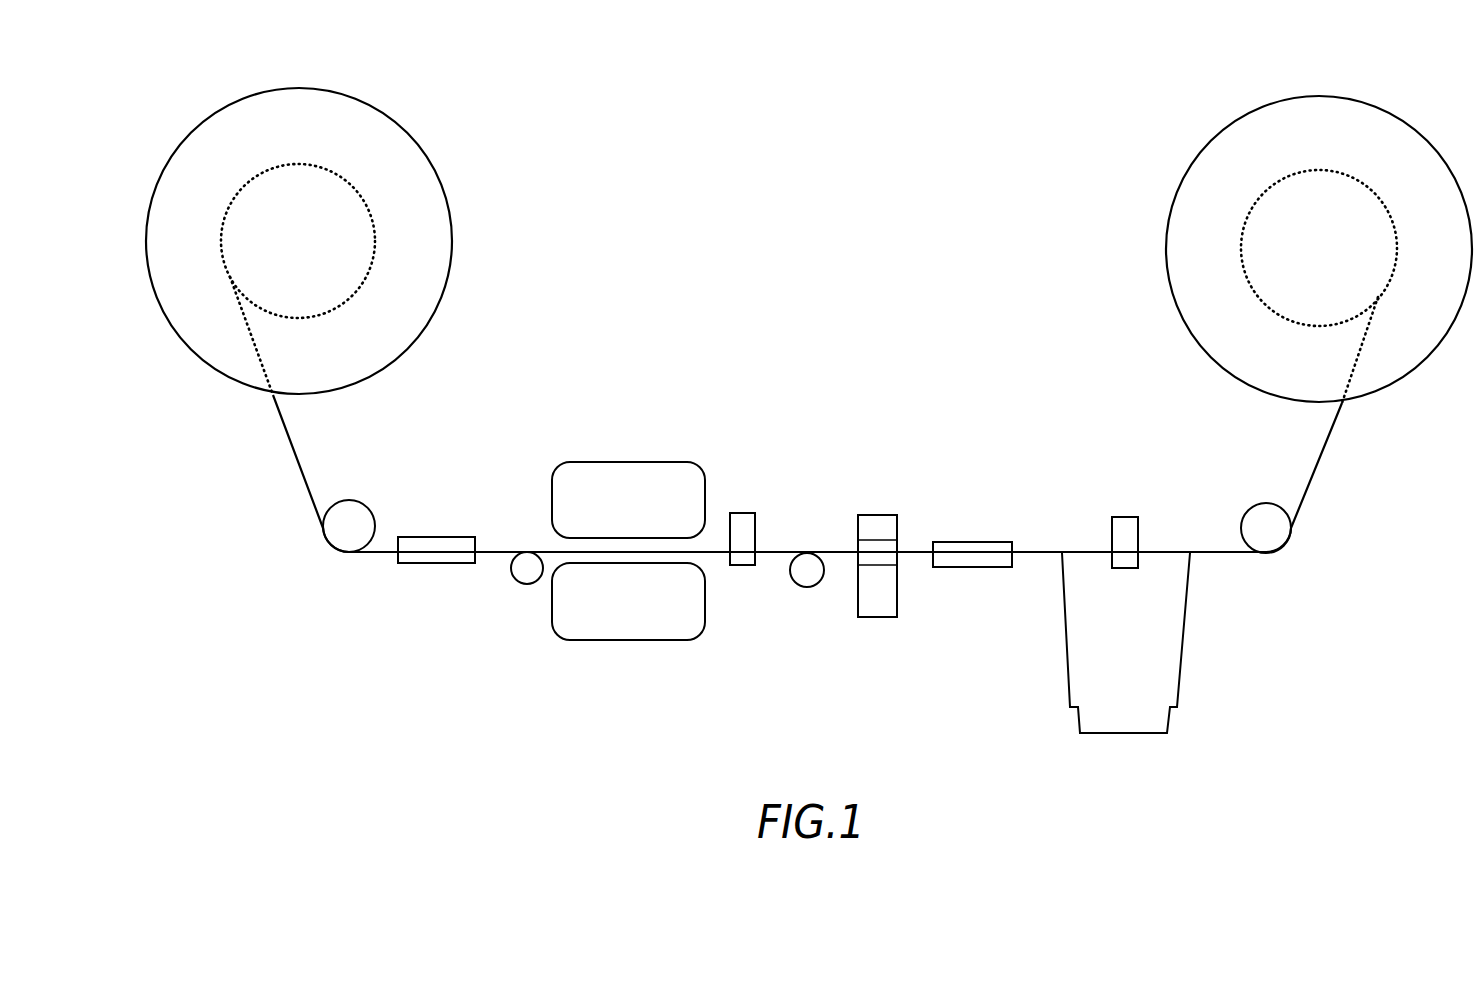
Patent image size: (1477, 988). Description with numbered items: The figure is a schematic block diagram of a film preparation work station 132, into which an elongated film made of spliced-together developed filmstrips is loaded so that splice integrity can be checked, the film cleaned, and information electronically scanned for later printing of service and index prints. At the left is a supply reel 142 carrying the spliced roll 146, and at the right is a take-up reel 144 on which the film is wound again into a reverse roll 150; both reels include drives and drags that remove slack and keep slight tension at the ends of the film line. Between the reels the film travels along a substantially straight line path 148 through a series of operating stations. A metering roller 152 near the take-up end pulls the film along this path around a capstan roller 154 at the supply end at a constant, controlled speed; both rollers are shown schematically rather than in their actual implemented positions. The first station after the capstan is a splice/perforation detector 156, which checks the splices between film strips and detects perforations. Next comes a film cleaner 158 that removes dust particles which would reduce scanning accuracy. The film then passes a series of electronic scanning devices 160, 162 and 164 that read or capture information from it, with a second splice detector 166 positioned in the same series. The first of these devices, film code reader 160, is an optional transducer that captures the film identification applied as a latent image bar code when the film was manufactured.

The film preparation work station 132 is at (848, 202).
The supply reel 142 is at (452, 242).
The take-up reel 144 is at (1167, 243).
The spliced roll 146 is at (350, 183).
The straight line path 148 is at (382, 552).
The reverse roll 150 is at (1270, 187).
The metering roller 152 is at (1248, 510).
The capstan roller 154 is at (367, 505).
The splice/perforation detector 156 is at (438, 537).
The film cleaner 158 is at (628, 462).
The film code reader 160 is at (742, 513).
The electronic scanning device 162 is at (878, 515).
The electronic scanning device 164 is at (1065, 628).
The second splice detector 166 is at (973, 542).